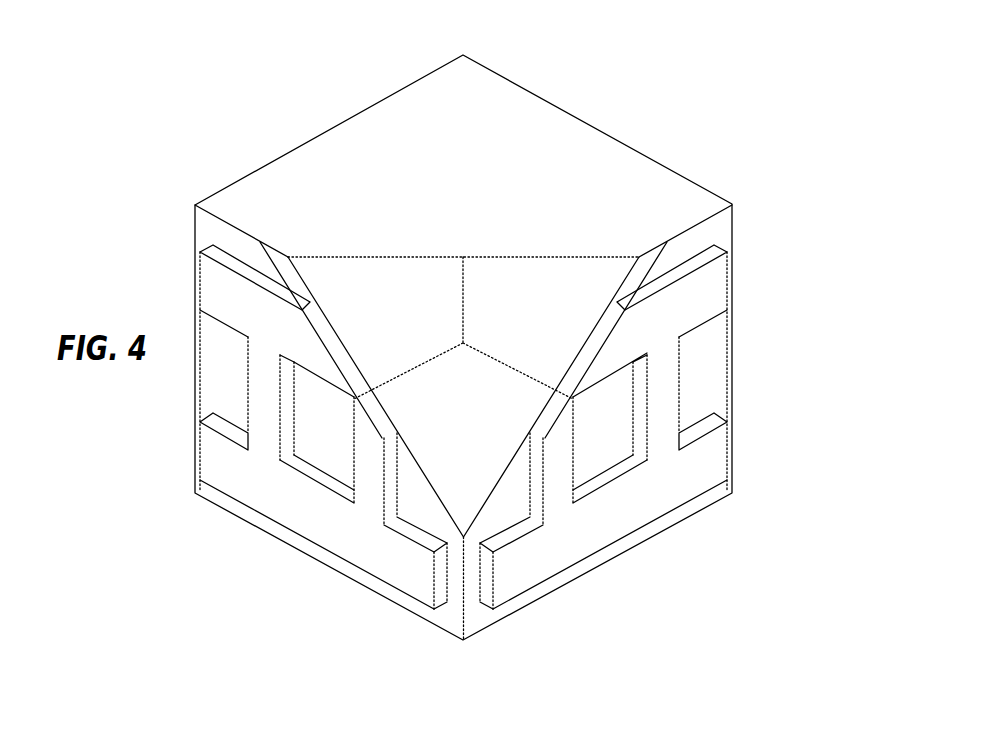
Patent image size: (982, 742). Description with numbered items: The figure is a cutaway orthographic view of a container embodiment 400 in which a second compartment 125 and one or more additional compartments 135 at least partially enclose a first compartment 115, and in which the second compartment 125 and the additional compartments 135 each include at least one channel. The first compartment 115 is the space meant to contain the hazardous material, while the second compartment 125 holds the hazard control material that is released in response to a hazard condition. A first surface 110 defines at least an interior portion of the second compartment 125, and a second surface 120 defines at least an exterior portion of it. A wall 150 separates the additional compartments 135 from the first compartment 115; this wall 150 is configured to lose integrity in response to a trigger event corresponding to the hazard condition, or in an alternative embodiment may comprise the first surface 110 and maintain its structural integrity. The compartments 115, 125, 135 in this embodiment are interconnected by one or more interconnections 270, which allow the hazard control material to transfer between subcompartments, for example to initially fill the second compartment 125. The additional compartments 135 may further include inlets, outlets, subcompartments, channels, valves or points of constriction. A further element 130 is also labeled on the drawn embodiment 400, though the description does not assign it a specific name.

The cube assembly 400 is at (748, 135).
The first surface 110 is at (553, 331).
The first compartment 115 is at (468, 482).
The second surface 120 is at (585, 355).
The second compartment 125 is at (587, 397).
The left V-groove 130 is at (335, 352).
The additional compartments 135 is at (357, 393).
The wall 150 is at (503, 466).
The interconnections 270 is at (665, 400).